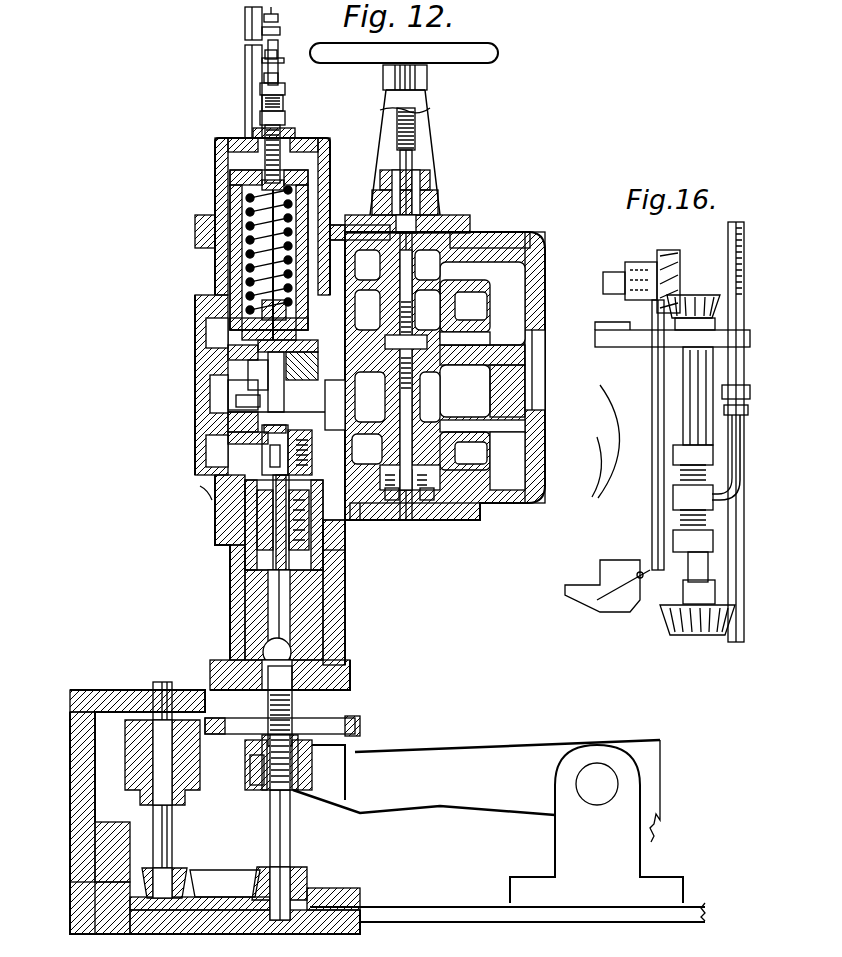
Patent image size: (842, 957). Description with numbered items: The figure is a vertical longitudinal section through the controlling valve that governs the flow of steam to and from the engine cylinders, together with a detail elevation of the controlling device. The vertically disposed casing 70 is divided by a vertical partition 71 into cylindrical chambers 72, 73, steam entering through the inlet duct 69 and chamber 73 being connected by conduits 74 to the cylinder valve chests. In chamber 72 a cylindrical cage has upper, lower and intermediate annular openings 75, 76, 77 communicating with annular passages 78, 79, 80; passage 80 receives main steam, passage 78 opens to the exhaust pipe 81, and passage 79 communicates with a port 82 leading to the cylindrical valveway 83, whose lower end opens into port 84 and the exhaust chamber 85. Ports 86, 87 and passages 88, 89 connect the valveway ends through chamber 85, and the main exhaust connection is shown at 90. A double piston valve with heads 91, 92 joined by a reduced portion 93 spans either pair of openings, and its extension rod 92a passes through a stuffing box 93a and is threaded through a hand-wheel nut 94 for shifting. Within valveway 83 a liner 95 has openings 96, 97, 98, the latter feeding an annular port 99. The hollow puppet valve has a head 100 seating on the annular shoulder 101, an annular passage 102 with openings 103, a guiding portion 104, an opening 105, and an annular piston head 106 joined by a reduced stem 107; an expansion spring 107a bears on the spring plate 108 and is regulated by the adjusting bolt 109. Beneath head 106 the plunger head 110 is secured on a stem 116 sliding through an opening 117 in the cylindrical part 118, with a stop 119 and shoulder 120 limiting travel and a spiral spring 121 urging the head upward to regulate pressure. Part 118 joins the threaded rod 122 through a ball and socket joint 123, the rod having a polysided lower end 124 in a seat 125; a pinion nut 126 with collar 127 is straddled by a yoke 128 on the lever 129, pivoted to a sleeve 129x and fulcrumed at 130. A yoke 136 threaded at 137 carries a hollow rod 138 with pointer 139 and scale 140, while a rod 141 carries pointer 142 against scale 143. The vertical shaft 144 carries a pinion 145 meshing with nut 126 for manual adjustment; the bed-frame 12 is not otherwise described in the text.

The base frame 12 is at (86, 690).
The inlet duct 69 is at (470, 426).
The casing 70 is at (532, 246).
The vertical partition 71 is at (296, 262).
The cylindrical chamber 72 is at (540, 280).
The cylindrical chamber 73 is at (230, 258).
The conduits 74 is at (240, 400).
The upper annular openings 75 is at (472, 316).
The lower annular openings 76 is at (470, 452).
The intermediate annular openings 77 is at (482, 374).
The annular passage 78 is at (478, 262).
The annular passage 79 is at (500, 438).
The annular passage 80 is at (500, 378).
The exhaust pipe 81 is at (362, 230).
The port 82 is at (372, 522).
The cylindrical valveway 83 is at (318, 436).
The port 84 is at (342, 545).
The exhaust chamber 85 is at (528, 482).
The ports 86 is at (466, 242).
The ports 87 is at (452, 500).
The passage 88 is at (432, 226).
The passage 89 is at (365, 522).
The main exhaust connection 90 is at (546, 392).
The head 91 is at (470, 344).
The head 92 is at (450, 472).
The extension rod 92a is at (416, 150).
The reduced portion 93 is at (470, 400).
The stuffing box 93a is at (428, 186).
The hand-wheel nut 94 is at (430, 80).
The liner 95 is at (238, 470).
The openings 96 is at (228, 492).
The openings 97 is at (238, 485).
The openings 98 is at (222, 372).
The annular port 99 is at (212, 388).
The head 100 is at (240, 438).
The annular shoulder 101 is at (232, 392).
The annular passage 102 is at (225, 348).
The openings 103 is at (240, 352).
The portion of head 104 is at (250, 325).
The opening 105 is at (250, 335).
The annular piston head 106 is at (205, 480).
The reduced stem 107 is at (240, 445).
The expansion spring 107a is at (228, 232).
The spring plate 108 is at (222, 170).
The adjusting bolt 109 is at (286, 103).
The plunger head 110 is at (245, 528).
The stem 116 is at (262, 556).
The opening 117 is at (275, 566).
The cylindrical part 118 is at (248, 626).
The stop 119 is at (332, 600).
The shoulder 120 is at (292, 575).
The spiral spring 121 is at (258, 528).
The threaded rod 122 is at (300, 698).
The ball and socket joint 123 is at (306, 654).
The polysided lower end 124 is at (292, 852).
The seat 125 is at (314, 886).
The pinion nut 126 is at (360, 726).
The collar 127 is at (322, 778).
The yoke 128 is at (300, 794).
The lever 129 is at (470, 806).
The sleeve 129x is at (262, 780).
The fulcrum 130 is at (598, 768).
The yoke 136 is at (298, 292).
The threaded connection 137 is at (312, 357).
The hollow rod 138 is at (296, 196).
The pointer 139 is at (262, 70).
The scale 140 is at (245, 62).
The rod 141 is at (282, 368).
The pointer 142 is at (279, 22).
The scale 143 is at (245, 22).
The vertical shaft 144 is at (168, 690).
The pinion 145 is at (190, 800).